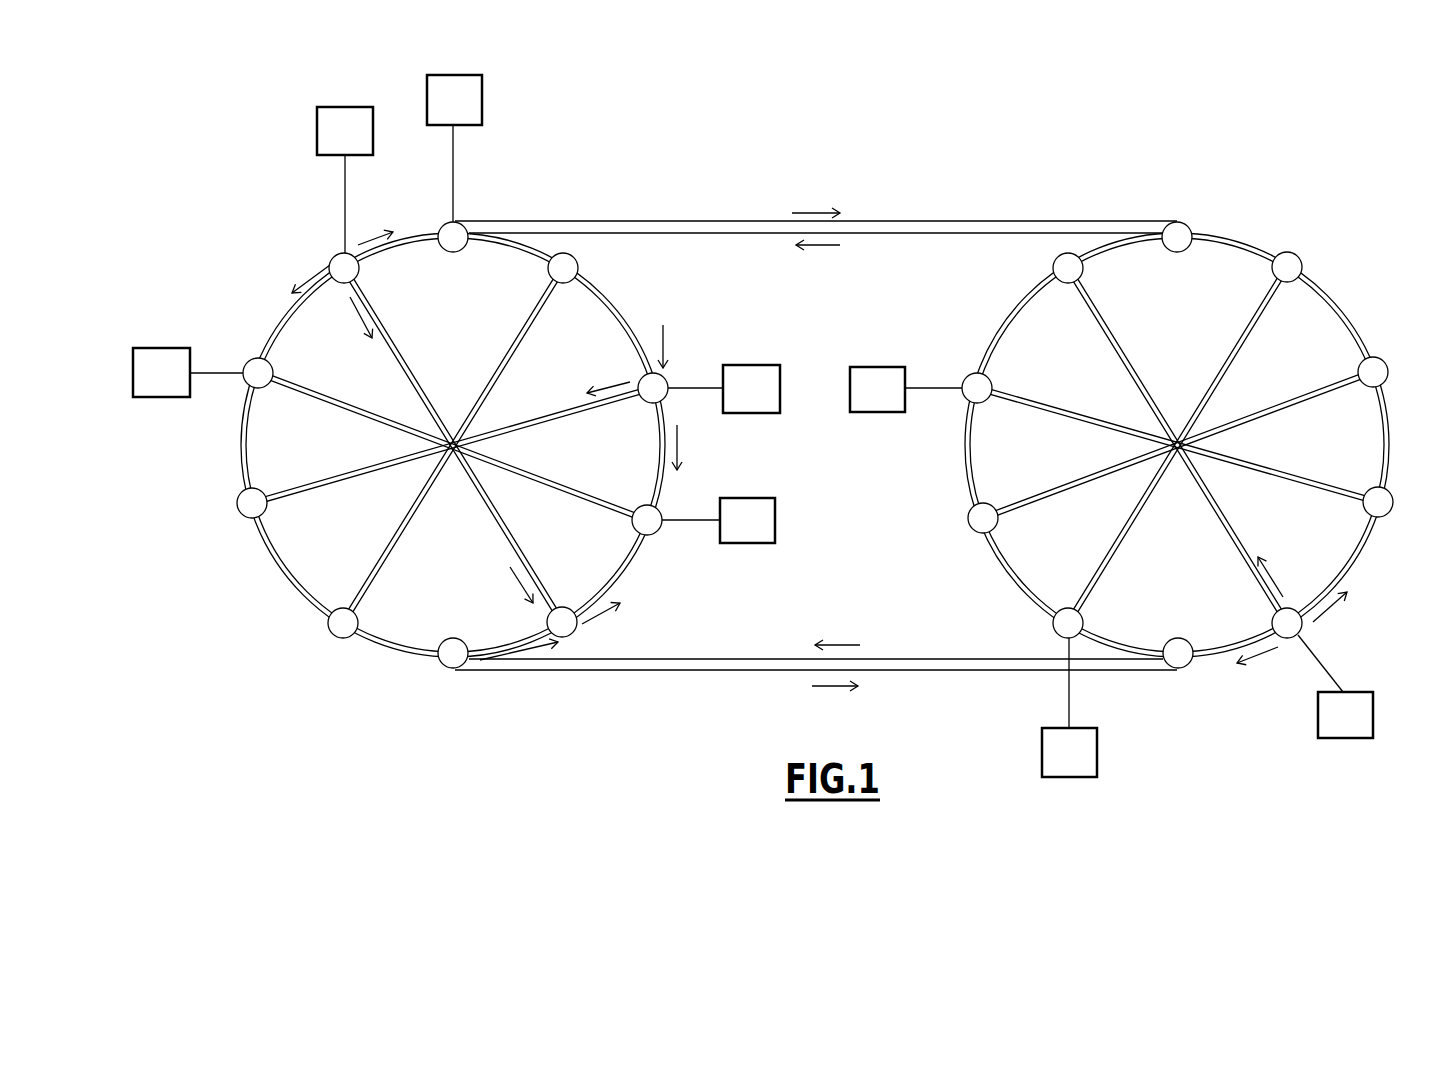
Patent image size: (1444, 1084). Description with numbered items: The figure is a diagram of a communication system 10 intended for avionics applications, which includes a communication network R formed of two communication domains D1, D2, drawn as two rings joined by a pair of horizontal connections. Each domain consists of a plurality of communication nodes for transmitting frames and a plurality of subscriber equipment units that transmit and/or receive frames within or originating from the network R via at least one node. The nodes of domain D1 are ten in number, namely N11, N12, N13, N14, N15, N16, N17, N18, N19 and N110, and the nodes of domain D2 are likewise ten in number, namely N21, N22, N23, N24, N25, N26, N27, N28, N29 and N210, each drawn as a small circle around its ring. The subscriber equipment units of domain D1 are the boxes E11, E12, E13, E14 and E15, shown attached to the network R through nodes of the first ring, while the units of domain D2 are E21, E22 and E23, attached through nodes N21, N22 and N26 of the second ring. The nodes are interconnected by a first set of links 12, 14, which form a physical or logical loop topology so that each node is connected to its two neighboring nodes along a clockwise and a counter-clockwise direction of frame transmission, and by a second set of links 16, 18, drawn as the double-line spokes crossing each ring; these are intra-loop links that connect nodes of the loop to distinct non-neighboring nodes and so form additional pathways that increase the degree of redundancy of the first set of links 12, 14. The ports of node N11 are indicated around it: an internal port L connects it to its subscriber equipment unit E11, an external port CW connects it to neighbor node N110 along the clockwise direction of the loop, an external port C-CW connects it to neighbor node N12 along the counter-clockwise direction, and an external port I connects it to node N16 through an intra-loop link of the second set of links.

The communication system 10 is at (1125, 155).
The first set of links (domain D1 loop) 12 is at (661, 483).
The first set of links (domain D2 loop) 14 is at (1348, 305).
The second set of links (domain D1 intra-loop links) 16 is at (393, 548).
The second set of links (domain D2 intra-loop links) 18 is at (1118, 338).
The first communication domain D1 is at (518, 195).
The second communication domain D2 is at (1268, 205).
The communication network R is at (948, 195).
The internal port L is at (335, 204).
The external port (clockwise) CW is at (374, 225).
The external port (counter-clockwise) C-CW is at (287, 274).
The external port (intra-loop) I is at (356, 317).
The communication node N11 is at (330, 253).
The communication node N12 is at (243, 357).
The communication node N13 is at (234, 505).
The communication node N14 is at (331, 635).
The communication node N15 is at (442, 667).
The communication node N16 is at (582, 634).
The communication node N17 is at (659, 538).
The communication node N18 is at (672, 398).
The communication node N19 is at (582, 266).
The communication node N110 is at (439, 218).
The communication node N21 is at (1048, 262).
The communication node N22 is at (961, 375).
The communication node N23 is at (964, 519).
The communication node N24 is at (1050, 626).
The communication node N25 is at (1187, 674).
The communication node N26 is at (1295, 642).
The communication node N27 is at (1391, 520).
The communication node N28 is at (1392, 368).
The communication node N29 is at (1302, 258).
The communication node N210 is at (1190, 220).
The subscriber equipment unit E11 is at (345, 131).
The subscriber equipment unit E12 is at (188, 372).
The subscriber equipment unit E13 is at (718, 520).
The subscriber equipment unit E14 is at (724, 389).
The subscriber equipment unit E15 is at (454, 148).
The subscriber equipment unit E21 is at (906, 389).
The subscriber equipment unit E22 is at (1069, 707).
The subscriber equipment unit E23 is at (1335, 686).